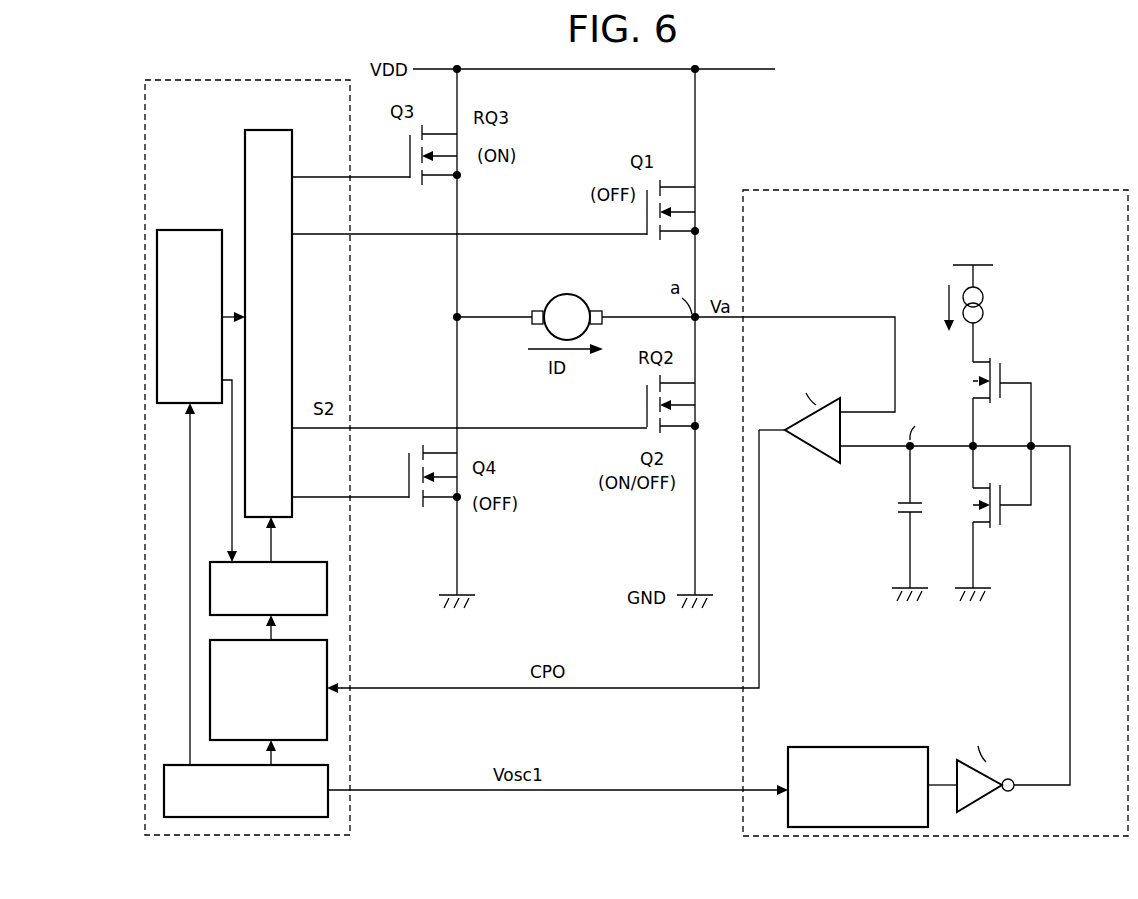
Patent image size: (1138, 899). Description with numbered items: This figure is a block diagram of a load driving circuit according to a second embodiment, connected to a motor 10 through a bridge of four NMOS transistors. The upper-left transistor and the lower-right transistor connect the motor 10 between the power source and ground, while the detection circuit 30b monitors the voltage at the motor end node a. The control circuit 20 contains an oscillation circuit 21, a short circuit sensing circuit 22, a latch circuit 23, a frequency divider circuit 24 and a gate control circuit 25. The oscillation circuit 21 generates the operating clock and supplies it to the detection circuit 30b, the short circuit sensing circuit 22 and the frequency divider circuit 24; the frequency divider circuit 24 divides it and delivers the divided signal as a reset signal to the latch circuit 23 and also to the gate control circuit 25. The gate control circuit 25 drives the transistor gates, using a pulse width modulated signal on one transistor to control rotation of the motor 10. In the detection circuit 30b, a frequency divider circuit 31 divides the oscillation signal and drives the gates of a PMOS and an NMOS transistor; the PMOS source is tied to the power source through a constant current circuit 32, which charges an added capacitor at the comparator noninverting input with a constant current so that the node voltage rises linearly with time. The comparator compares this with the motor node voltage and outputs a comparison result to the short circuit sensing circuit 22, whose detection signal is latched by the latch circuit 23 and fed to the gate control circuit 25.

The motor 10 is at (590, 300).
The control circuit 20 is at (188, 80).
The oscillation circuit 21 is at (180, 765).
The short circuit sensing circuit 22 is at (327, 660).
The latch circuit 23 is at (327, 587).
The frequency divider circuit 24 is at (186, 229).
The gate control circuit 25 is at (292, 153).
The detection circuit 30b is at (806, 190).
The frequency divider circuit 31 is at (868, 747).
The constant current circuit 32 is at (983, 297).